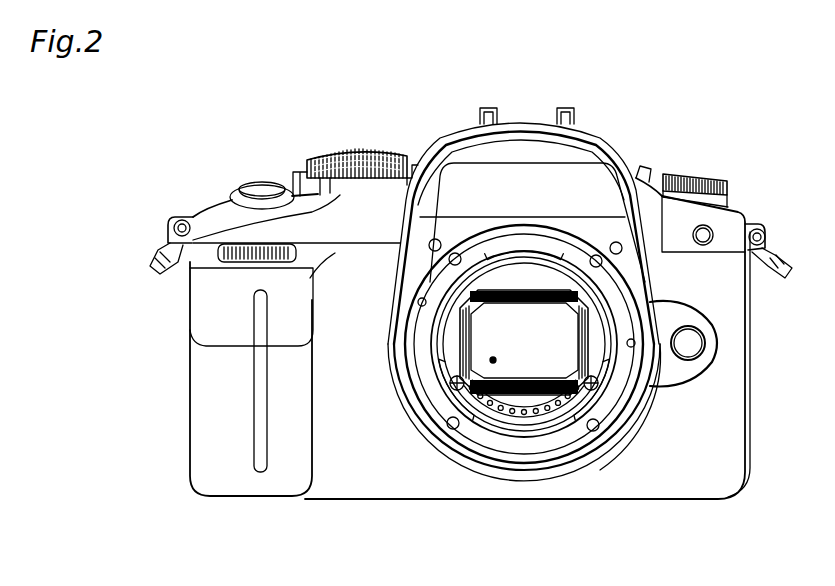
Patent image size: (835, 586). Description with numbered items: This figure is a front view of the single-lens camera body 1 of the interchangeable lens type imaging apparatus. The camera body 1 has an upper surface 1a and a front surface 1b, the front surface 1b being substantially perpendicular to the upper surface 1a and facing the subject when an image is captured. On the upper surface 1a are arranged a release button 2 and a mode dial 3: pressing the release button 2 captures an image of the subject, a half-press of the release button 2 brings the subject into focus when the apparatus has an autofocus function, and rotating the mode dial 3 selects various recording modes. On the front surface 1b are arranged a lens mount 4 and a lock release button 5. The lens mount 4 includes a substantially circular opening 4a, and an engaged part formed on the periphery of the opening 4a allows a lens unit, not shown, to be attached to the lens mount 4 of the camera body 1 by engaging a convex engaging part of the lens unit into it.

The camera body 1 is at (641, 153).
The upper surface 1a is at (415, 160).
The front surface 1b is at (644, 465).
The release button 2 is at (260, 186).
The mode dial 3 is at (356, 150).
The lens mount 4 is at (553, 445).
The opening 4a is at (493, 363).
The lock release button 5 is at (693, 347).